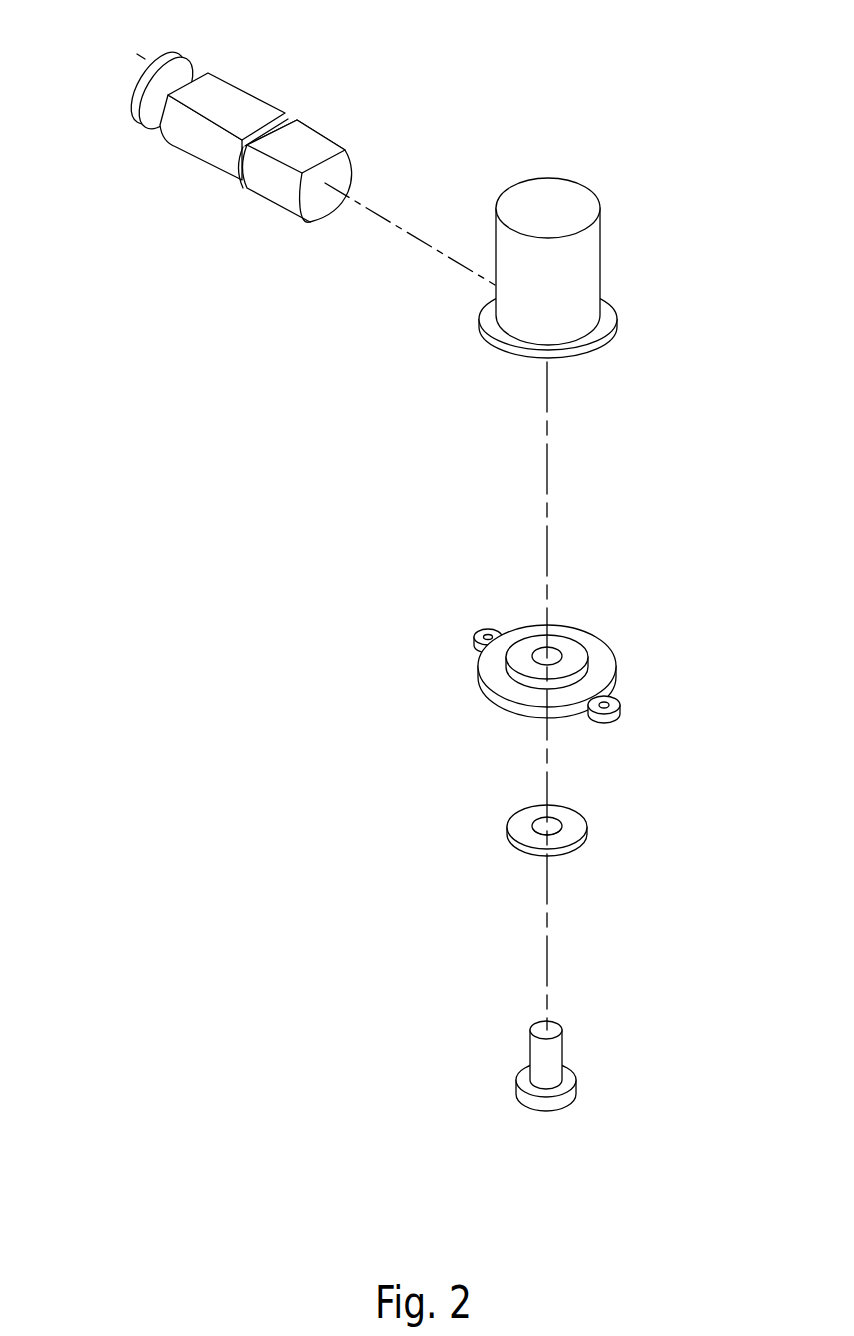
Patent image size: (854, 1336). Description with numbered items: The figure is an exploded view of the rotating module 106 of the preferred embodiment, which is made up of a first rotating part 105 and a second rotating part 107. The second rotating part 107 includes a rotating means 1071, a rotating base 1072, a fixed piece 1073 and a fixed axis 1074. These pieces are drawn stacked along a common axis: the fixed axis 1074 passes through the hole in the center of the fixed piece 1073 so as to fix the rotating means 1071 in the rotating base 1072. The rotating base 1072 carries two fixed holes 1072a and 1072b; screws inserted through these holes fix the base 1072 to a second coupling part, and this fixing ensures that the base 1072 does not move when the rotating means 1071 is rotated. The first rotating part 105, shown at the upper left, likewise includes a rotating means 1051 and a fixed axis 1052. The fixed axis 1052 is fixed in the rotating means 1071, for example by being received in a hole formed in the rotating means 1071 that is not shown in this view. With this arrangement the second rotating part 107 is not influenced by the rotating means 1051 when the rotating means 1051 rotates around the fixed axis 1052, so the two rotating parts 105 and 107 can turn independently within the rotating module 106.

The rotating module 106 is at (92, 22).
The first rotating part 105 is at (245, 297).
The rotating means 1051 is at (200, 140).
The fixed axis 1052 is at (277, 190).
The second rotating part 107 is at (725, 152).
The rotating means 1071 is at (582, 202).
The rotating base 1072 is at (575, 653).
The fixed hole 1072a is at (473, 637).
The fixed hole 1072b is at (620, 700).
The fixed piece 1073 is at (572, 830).
The fixed axis 1074 is at (555, 1053).